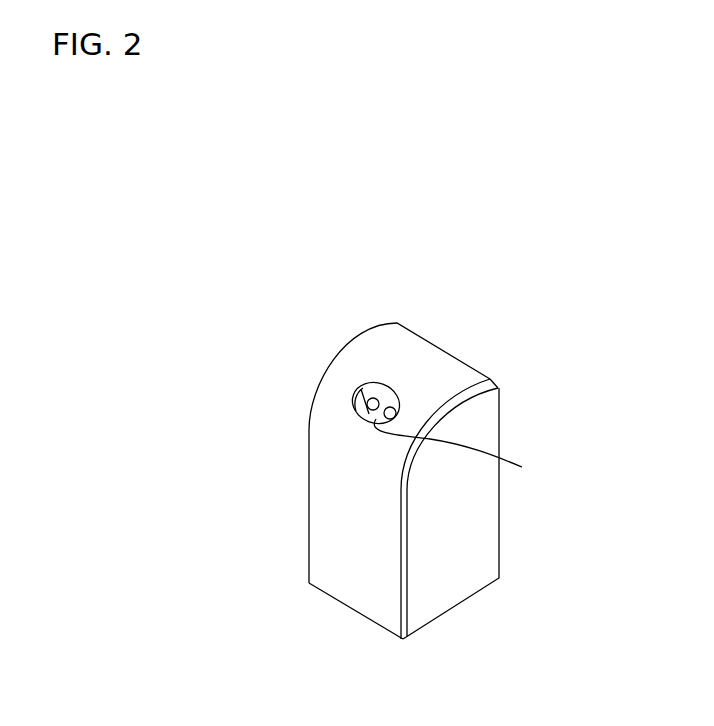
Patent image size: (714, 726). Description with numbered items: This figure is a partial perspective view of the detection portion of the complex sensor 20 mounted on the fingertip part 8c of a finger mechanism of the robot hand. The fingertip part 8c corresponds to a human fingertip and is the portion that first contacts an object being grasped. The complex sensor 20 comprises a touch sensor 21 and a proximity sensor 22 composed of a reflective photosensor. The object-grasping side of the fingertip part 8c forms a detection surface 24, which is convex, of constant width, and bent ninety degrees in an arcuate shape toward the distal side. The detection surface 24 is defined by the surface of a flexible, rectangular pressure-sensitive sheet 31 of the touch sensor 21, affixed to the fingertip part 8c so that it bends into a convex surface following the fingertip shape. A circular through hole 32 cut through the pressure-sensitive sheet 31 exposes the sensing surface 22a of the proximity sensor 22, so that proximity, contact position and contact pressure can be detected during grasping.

The fingertip part 8c is at (387, 449).
The complex sensor 20 is at (213, 315).
The touch sensor 21 is at (318, 391).
The proximity sensor 22 is at (396, 371).
The sensing surface 22a is at (471, 451).
The detection surface 24 is at (328, 538).
The pressure-sensitive sheet 31 is at (309, 482).
The through hole 32 is at (387, 383).